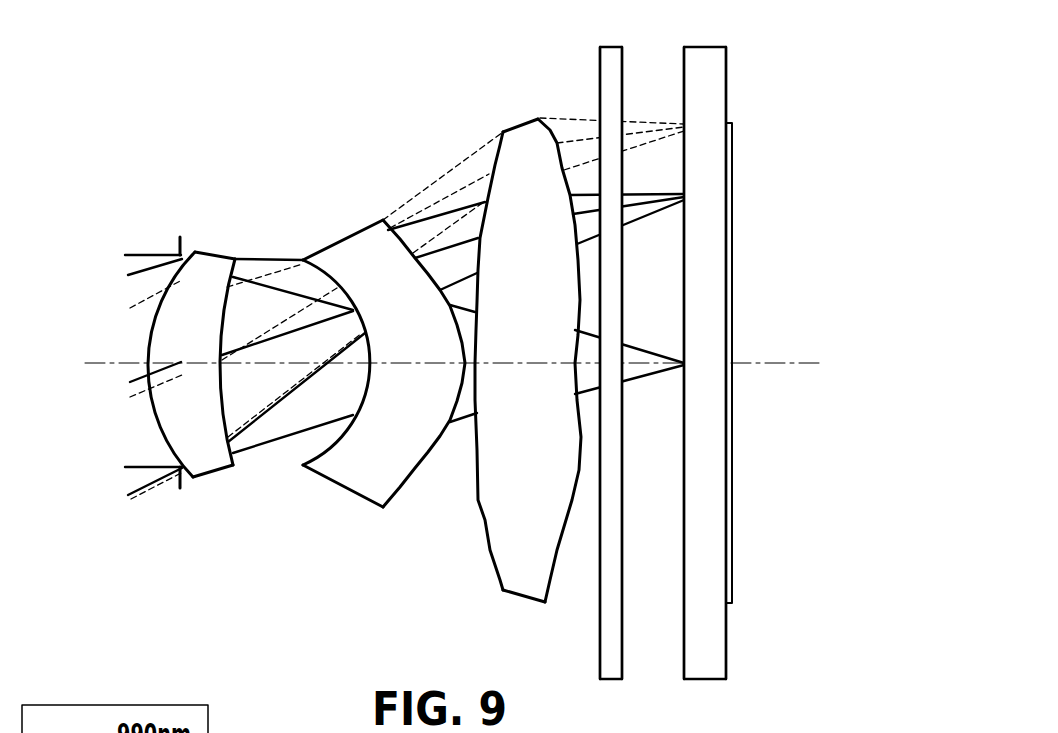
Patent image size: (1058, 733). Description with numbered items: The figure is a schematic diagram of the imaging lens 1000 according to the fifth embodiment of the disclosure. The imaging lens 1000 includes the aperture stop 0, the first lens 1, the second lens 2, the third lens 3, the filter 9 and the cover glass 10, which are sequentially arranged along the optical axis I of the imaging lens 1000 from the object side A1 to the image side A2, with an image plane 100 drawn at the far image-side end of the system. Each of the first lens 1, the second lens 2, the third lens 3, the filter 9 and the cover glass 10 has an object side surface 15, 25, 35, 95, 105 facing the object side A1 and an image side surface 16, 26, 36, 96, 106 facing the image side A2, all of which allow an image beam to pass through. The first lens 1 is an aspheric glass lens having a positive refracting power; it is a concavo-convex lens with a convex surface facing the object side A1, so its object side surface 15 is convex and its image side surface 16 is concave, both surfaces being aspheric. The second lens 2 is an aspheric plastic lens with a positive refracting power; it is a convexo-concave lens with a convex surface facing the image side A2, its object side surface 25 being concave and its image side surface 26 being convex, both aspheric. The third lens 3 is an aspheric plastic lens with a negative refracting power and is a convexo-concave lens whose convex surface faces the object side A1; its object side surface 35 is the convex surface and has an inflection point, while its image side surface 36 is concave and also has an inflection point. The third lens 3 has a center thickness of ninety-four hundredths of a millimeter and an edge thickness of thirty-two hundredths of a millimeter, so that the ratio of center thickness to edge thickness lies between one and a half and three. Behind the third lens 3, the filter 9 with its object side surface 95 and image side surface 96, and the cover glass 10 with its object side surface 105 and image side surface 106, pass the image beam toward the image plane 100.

The imaging lens 1000 is at (118, 97).
The aperture stop 0 is at (177, 241).
The first lens 1 is at (183, 360).
The object side surface of the first lens 15 is at (162, 432).
The image side surface of the first lens 16 is at (241, 468).
The second lens 2 is at (368, 358).
The object side surface of the second lens 25 is at (303, 459).
The image side surface of the second lens 26 is at (392, 489).
The third lens 3 is at (521, 361).
The object side surface of the third lens 35 is at (503, 590).
The image side surface of the third lens 36 is at (545, 604).
The filter 9 is at (586, 373).
The object side surface of the filter 95 is at (600, 664).
The image side surface of the filter 96 is at (623, 665).
The cover glass 10 is at (718, 371).
The object side surface of the cover glass 105 is at (683, 660).
The image side surface of the cover glass 106 is at (727, 667).
The image plane 100 is at (733, 591).
The optical axis I is at (113, 361).
The object side A1 is at (148, 44).
The image side A2 is at (565, 50).